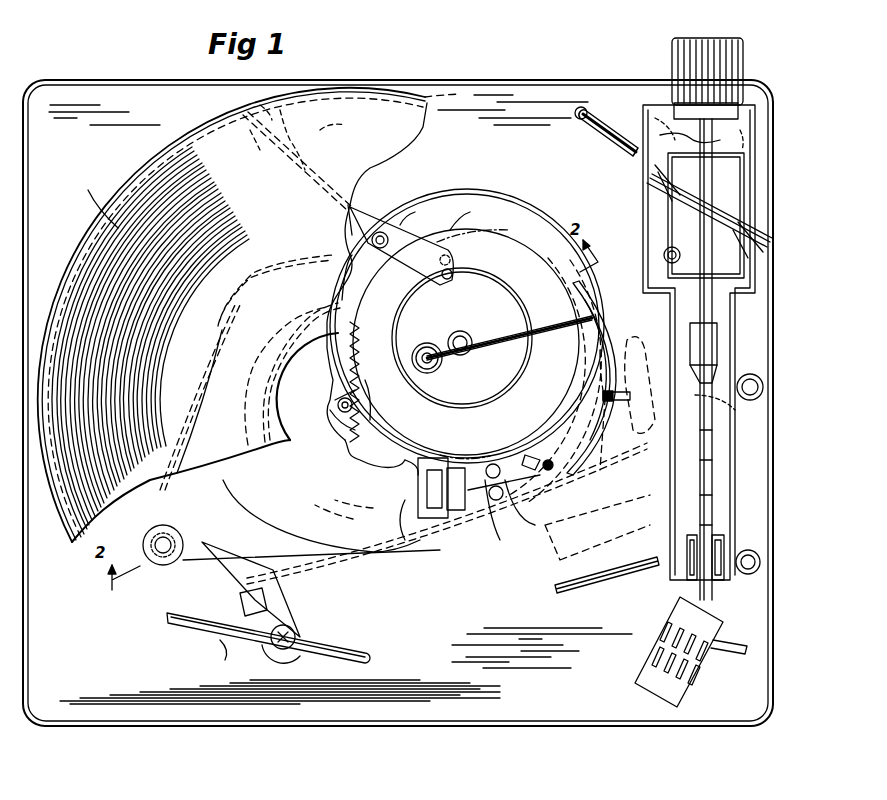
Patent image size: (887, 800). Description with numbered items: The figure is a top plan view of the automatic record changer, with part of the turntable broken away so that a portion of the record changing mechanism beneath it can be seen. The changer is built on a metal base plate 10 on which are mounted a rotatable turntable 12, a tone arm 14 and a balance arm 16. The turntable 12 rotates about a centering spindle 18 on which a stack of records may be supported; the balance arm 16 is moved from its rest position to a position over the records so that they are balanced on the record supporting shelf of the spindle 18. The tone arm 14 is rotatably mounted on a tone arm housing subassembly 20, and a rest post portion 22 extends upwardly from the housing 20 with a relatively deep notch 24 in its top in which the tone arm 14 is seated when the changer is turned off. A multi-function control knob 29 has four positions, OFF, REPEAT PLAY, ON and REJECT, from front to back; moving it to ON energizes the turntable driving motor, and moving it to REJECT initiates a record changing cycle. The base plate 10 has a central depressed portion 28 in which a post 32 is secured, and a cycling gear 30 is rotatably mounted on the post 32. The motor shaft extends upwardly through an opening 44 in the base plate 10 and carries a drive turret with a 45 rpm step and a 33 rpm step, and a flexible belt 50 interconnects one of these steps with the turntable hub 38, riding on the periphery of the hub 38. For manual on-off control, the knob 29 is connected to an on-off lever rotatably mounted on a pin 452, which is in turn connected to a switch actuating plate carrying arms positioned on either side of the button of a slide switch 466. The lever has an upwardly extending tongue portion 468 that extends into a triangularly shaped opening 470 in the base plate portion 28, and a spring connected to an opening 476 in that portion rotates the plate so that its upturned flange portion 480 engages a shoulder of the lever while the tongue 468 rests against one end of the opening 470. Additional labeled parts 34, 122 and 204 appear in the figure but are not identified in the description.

The base plate 10 is at (462, 95).
The turntable 12 is at (142, 160).
The tone arm 14 is at (712, 455).
The balance arm 16 is at (598, 108).
The centering spindle 18 is at (338, 402).
The tone arm housing subassembly 20 is at (762, 184).
The rest post portion 22 is at (690, 568).
The notch 24 is at (715, 578).
The central depressed portion 28 is at (508, 220).
The multi-function control knob 29 is at (762, 557).
The cycling gear 30 is at (358, 294).
The post 32 is at (468, 336).
The bushing 33 is at (712, 357).
The spindle 34 is at (450, 330).
The turntable hub 38 is at (228, 495).
The opening 44 is at (182, 530).
The detent 45 is at (715, 406).
The flexible belt 50 is at (160, 500).
The lever 122 is at (435, 335).
The grommet 204 is at (760, 398).
The pin 452 is at (500, 522).
The slide switch 466 is at (428, 545).
The tongue portion 468 is at (534, 502).
The triangularly shaped opening 470 is at (585, 400).
The opening 476 is at (552, 460).
The upturned flange portion 480 is at (460, 515).